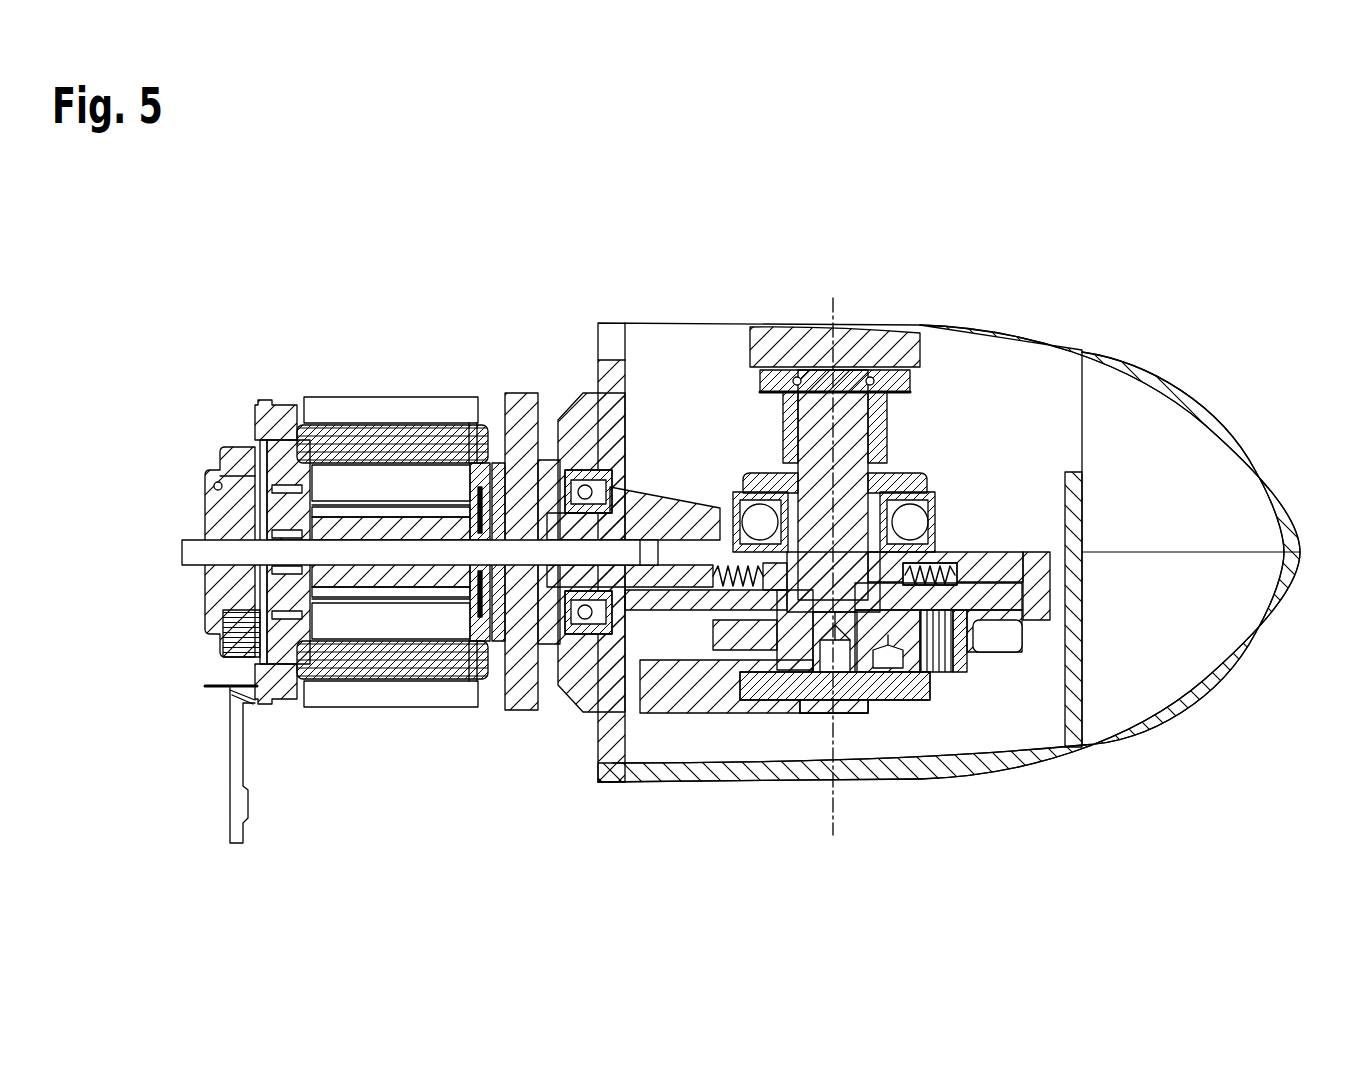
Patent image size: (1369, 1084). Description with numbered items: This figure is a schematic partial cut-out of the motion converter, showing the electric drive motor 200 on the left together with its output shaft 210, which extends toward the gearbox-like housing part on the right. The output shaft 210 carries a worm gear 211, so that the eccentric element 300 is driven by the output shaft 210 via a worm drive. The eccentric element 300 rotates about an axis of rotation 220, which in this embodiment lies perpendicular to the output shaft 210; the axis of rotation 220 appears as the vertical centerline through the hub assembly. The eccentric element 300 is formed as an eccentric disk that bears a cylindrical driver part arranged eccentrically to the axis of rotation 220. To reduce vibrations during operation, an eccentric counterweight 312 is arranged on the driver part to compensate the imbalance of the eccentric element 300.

The electric drive motor 200 is at (382, 693).
The output shaft 210 is at (640, 547).
The worm gear 211 is at (697, 527).
The axis of rotation 220 is at (840, 807).
The eccentric element 300 is at (1013, 597).
The eccentric counterweight 312 is at (697, 700).